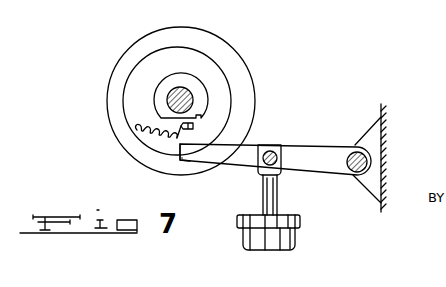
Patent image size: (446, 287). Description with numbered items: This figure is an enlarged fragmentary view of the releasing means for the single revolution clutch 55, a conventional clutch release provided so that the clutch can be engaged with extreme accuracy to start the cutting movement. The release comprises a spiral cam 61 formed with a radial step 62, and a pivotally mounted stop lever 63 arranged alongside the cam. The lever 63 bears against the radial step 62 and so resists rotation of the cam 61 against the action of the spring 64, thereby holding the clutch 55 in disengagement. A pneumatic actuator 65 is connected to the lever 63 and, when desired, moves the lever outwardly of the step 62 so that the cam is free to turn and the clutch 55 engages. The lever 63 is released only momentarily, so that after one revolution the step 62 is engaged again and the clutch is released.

The single revolution clutch 55 is at (197, 27).
The spiral cam 61 is at (150, 70).
The radial step 62 is at (182, 161).
The stop lever 63 is at (312, 152).
The spring 64 is at (138, 128).
The pneumatic actuator 65 is at (297, 236).